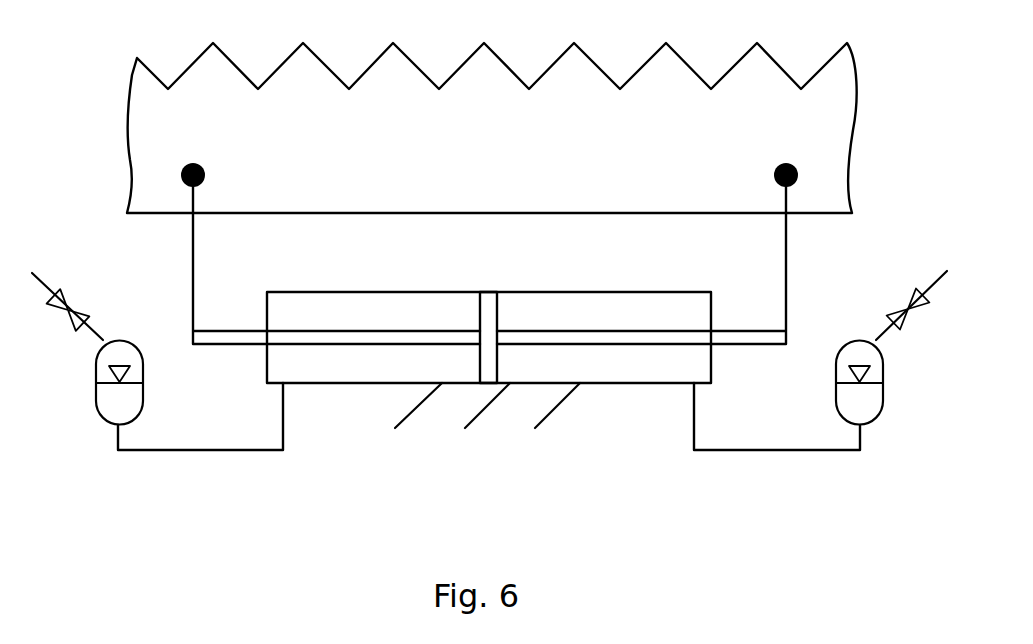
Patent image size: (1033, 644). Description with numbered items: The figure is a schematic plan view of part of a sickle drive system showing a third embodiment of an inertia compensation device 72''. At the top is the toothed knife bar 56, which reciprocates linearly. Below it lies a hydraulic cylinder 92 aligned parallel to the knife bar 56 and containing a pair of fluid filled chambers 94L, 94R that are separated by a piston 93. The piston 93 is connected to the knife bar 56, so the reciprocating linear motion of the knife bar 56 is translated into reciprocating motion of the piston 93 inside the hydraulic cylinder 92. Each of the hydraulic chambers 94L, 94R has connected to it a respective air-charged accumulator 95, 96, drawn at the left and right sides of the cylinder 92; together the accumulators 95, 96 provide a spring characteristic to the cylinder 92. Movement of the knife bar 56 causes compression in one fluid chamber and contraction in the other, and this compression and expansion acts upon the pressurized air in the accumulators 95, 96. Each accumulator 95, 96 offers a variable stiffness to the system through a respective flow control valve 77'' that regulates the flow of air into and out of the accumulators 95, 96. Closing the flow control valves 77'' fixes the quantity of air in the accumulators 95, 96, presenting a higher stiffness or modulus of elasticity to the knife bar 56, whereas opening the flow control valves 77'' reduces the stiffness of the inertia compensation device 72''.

The knife bar 56 is at (140, 156).
The inertia compensation device 72'' is at (811, 528).
The flow control valves 77'' is at (489, 295).
The hydraulic cylinder 92 is at (663, 383).
The piston 93 is at (488, 373).
The fluid filled chamber 94L is at (373, 373).
The fluid filled chamber 94R is at (587, 374).
The air-charged accumulator 95 is at (100, 420).
The air-charged accumulator 96 is at (878, 418).